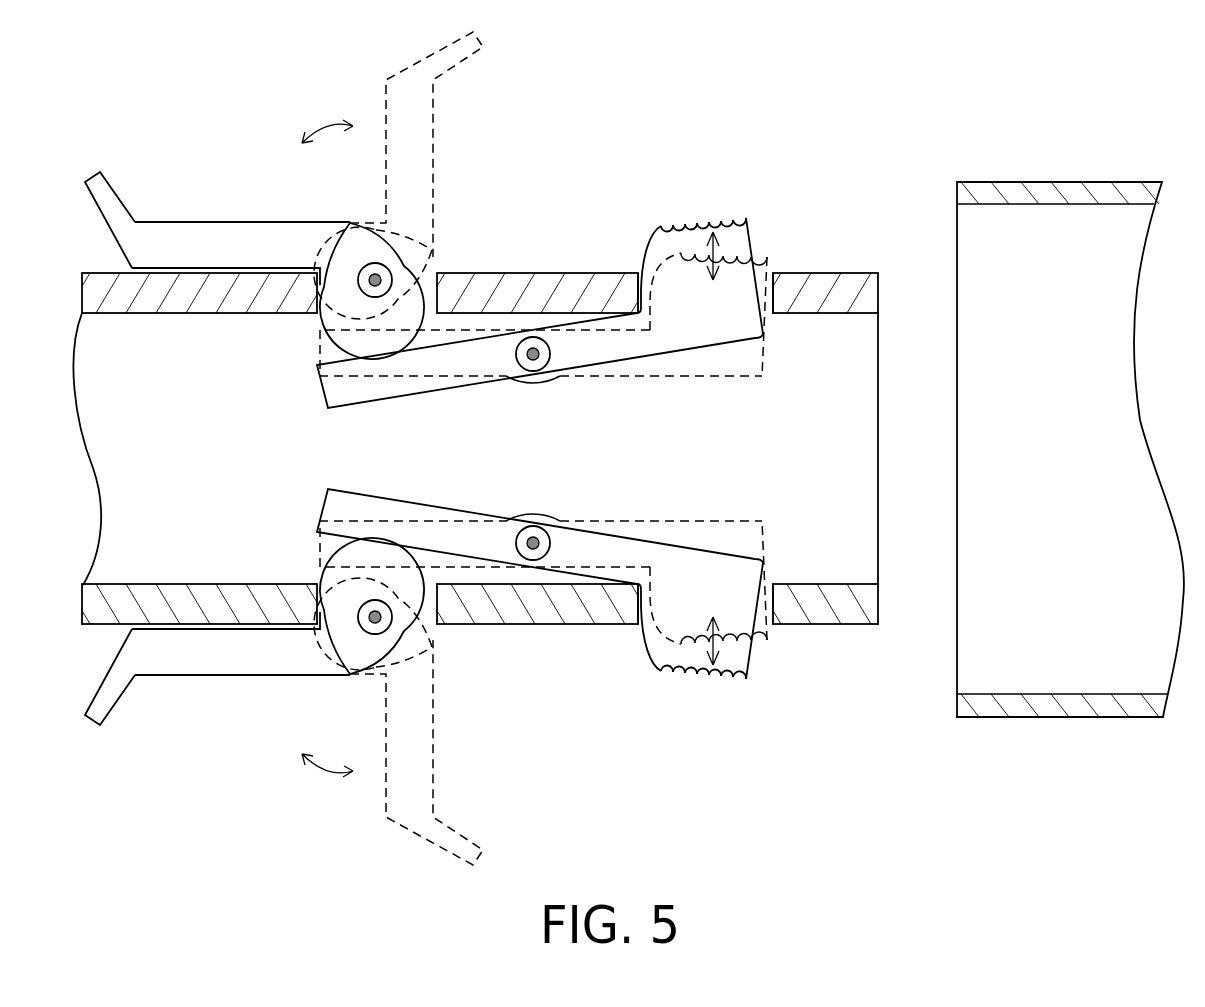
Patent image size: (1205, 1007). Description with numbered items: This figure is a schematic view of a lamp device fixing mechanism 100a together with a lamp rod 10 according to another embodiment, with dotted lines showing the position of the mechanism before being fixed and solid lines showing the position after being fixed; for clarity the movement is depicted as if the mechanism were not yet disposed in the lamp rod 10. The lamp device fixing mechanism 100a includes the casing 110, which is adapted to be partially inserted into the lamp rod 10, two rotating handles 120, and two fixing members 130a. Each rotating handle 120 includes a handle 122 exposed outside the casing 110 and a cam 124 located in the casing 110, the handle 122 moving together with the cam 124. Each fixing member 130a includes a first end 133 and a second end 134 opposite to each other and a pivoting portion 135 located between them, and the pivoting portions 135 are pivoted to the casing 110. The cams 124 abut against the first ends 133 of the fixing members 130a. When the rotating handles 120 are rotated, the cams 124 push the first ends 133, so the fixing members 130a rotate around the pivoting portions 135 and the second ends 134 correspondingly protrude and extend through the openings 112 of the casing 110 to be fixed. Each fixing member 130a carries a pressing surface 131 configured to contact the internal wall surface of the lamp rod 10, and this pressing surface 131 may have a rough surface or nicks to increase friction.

The lamp rod 10 is at (1075, 195).
The lamp device fixing mechanism 100a is at (902, 90).
The casing 110 is at (860, 290).
The opening 112 is at (642, 253).
The rotating handle 120 is at (240, 245).
The handle 122 is at (108, 207).
The cam 124 is at (347, 337).
The fixing member 130a is at (749, 151).
The pressing surface 131 is at (697, 218).
The first end 133 is at (346, 397).
The second end 134 is at (740, 243).
The pivoting portion 135 is at (530, 362).